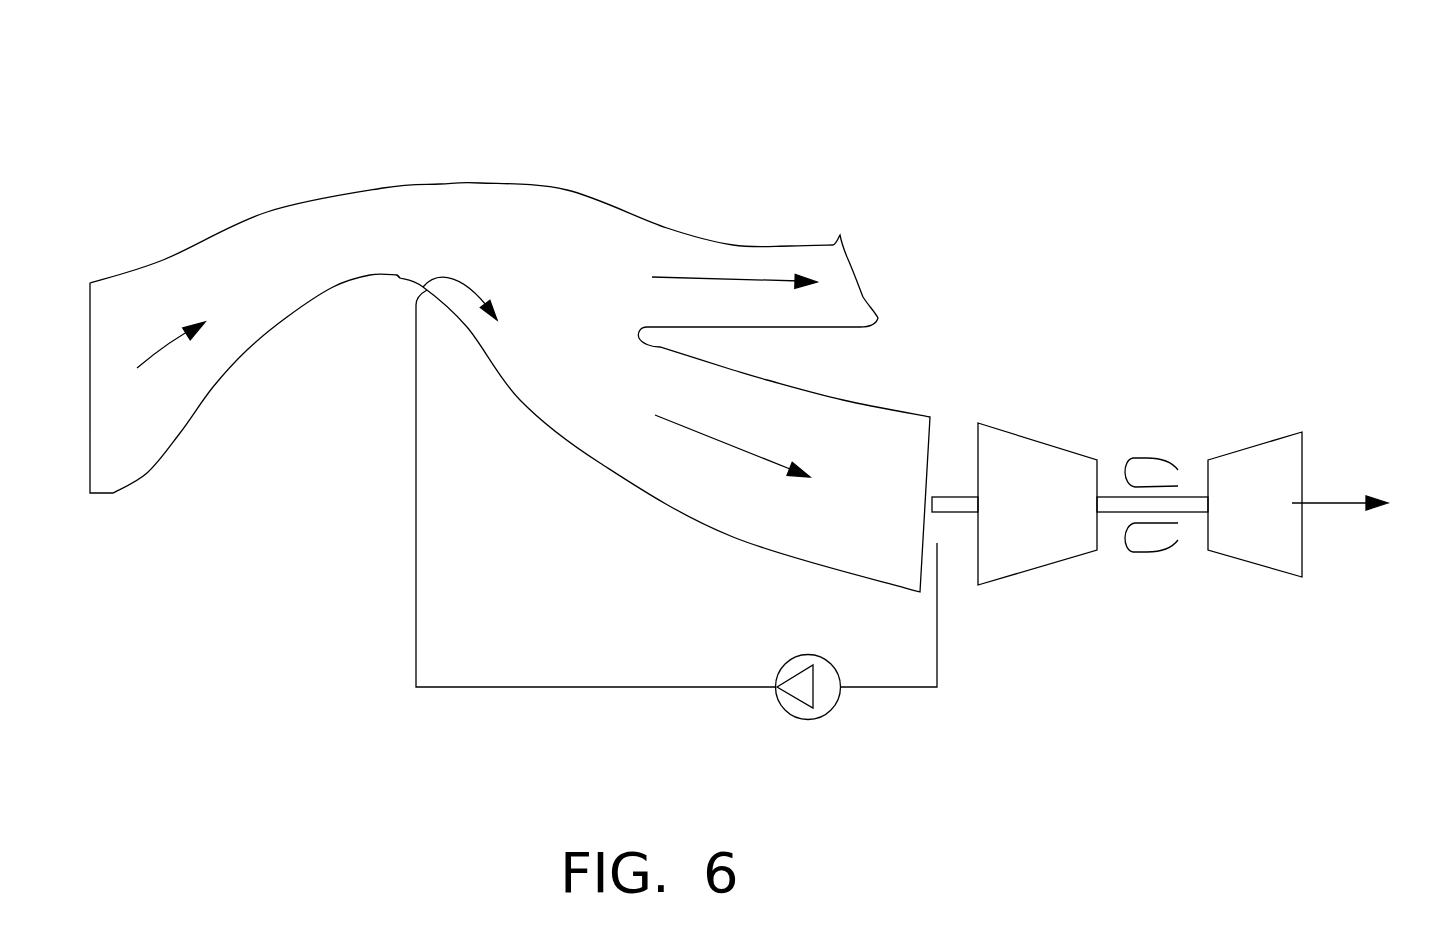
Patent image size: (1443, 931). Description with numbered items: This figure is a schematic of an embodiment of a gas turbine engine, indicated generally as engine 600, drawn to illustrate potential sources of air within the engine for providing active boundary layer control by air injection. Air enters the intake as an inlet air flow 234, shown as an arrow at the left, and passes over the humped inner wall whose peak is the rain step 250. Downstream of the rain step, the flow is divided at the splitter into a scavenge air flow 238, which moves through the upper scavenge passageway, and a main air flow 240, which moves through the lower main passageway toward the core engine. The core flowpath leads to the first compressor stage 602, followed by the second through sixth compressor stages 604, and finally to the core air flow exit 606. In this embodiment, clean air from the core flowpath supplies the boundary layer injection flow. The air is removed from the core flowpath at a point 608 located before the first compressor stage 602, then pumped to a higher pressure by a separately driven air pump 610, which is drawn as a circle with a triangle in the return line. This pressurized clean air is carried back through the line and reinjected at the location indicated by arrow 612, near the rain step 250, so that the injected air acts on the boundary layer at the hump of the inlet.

The gas turbine engine 600 is at (243, 118).
The inlet air flow 234 is at (178, 340).
The rain step 250 is at (400, 250).
The reinjected clean air flow 612 is at (430, 270).
The scavenge air flow 238 is at (733, 277).
The main air flow 240 is at (733, 450).
The first compressor stage 602 is at (1032, 433).
The second through sixth compressor stages 604 is at (1225, 455).
The core air flow exit 606 is at (1317, 503).
The air removal point 608 is at (937, 627).
The air pump 610 is at (803, 720).